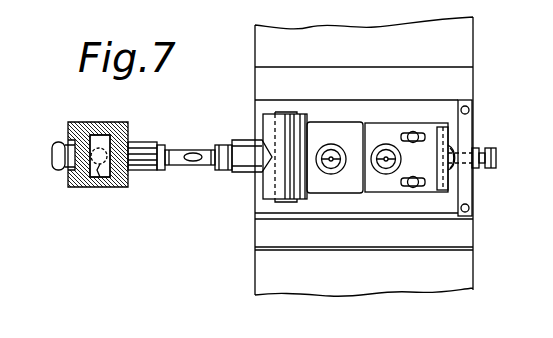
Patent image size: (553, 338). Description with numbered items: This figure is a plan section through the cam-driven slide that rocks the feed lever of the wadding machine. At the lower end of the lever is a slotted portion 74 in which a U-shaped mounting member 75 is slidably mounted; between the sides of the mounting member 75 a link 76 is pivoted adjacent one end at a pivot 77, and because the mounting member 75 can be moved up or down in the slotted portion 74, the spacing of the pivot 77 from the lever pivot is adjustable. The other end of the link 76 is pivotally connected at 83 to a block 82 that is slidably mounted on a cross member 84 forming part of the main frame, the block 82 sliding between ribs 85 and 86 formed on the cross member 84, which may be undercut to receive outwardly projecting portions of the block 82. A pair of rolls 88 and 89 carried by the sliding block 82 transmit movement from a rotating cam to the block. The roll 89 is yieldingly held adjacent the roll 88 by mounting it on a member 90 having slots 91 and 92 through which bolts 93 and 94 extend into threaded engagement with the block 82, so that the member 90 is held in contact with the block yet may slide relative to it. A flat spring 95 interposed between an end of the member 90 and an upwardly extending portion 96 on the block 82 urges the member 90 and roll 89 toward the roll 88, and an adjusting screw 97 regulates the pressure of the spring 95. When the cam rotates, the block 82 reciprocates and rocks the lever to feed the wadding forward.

The slotted portion 74 is at (99, 122).
The mounting member 75 is at (129, 136).
The link 76 is at (211, 148).
The pivot 77 is at (113, 187).
The block 82 is at (346, 112).
The pivotal connection 83 is at (289, 112).
The cross member 84 is at (468, 28).
The rib 85 is at (469, 85).
The rib 86 is at (468, 237).
The roll 88 is at (333, 175).
The roll 89 is at (386, 178).
The member 90 is at (386, 128).
The slot 91 is at (425, 132).
The slot 92 is at (423, 187).
The bolt 93 is at (414, 132).
The bolt 94 is at (414, 188).
The flat spring 95 is at (455, 148).
The upwardly extending portion 96 is at (472, 187).
The adjusting screw 97 is at (497, 157).